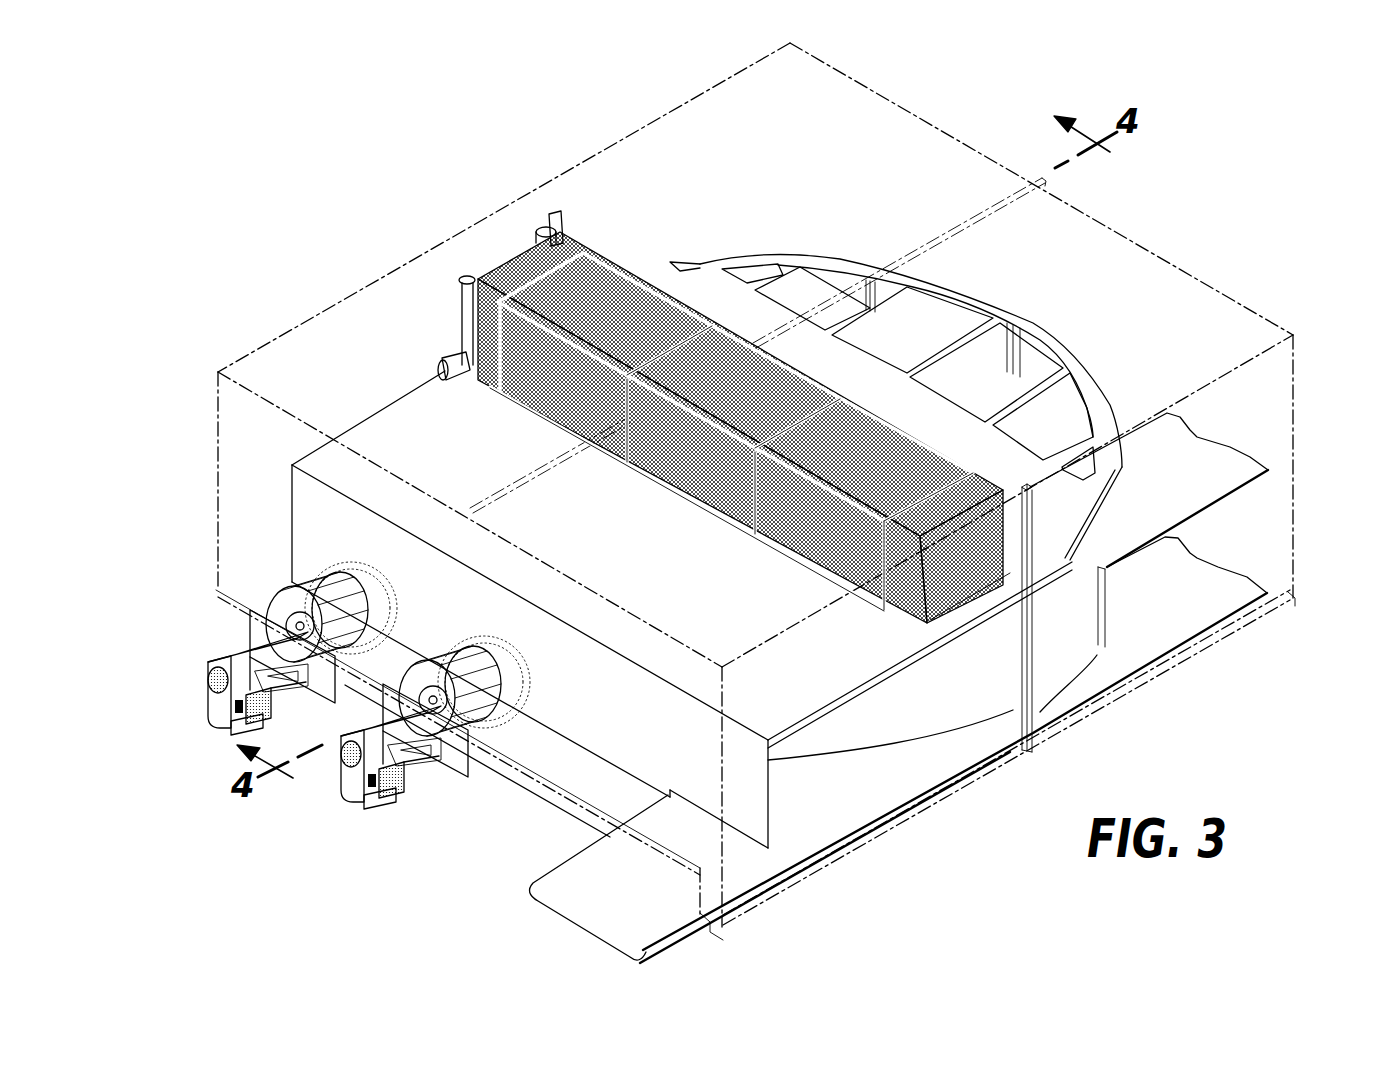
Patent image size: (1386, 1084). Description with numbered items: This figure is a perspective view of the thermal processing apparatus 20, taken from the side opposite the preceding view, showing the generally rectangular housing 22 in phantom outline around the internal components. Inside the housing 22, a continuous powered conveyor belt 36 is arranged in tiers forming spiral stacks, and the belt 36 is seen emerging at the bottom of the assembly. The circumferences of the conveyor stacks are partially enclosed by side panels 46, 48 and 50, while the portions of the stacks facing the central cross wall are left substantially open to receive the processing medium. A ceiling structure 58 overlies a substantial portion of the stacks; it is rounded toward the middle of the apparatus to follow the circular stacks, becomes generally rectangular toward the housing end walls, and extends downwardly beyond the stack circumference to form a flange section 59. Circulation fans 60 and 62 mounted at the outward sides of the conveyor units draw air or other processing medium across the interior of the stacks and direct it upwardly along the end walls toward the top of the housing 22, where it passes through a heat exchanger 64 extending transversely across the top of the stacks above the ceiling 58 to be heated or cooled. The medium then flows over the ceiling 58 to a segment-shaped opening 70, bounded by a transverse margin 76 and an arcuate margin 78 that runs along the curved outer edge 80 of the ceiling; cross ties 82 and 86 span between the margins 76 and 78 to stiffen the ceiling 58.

The thermal processing apparatus 20 is at (428, 131).
The housing 22 is at (320, 306).
The conveyor belt 36 is at (602, 891).
The side panel 46 is at (1073, 665).
The side panel 48 is at (937, 716).
The side panel 50 is at (840, 740).
The ceiling structure 58 is at (1270, 452).
The flange section 59 is at (307, 511).
The circulation fan 60 is at (212, 702).
The circulation fan 62 is at (342, 775).
The heat exchanger 64 is at (512, 260).
The opening 70 is at (812, 282).
The transverse margin 76 is at (1082, 505).
The arcuate margin 78 is at (833, 272).
The curved outer edge 80 is at (1033, 372).
The cross tie 82 is at (900, 287).
The cross tie 86 is at (1043, 407).